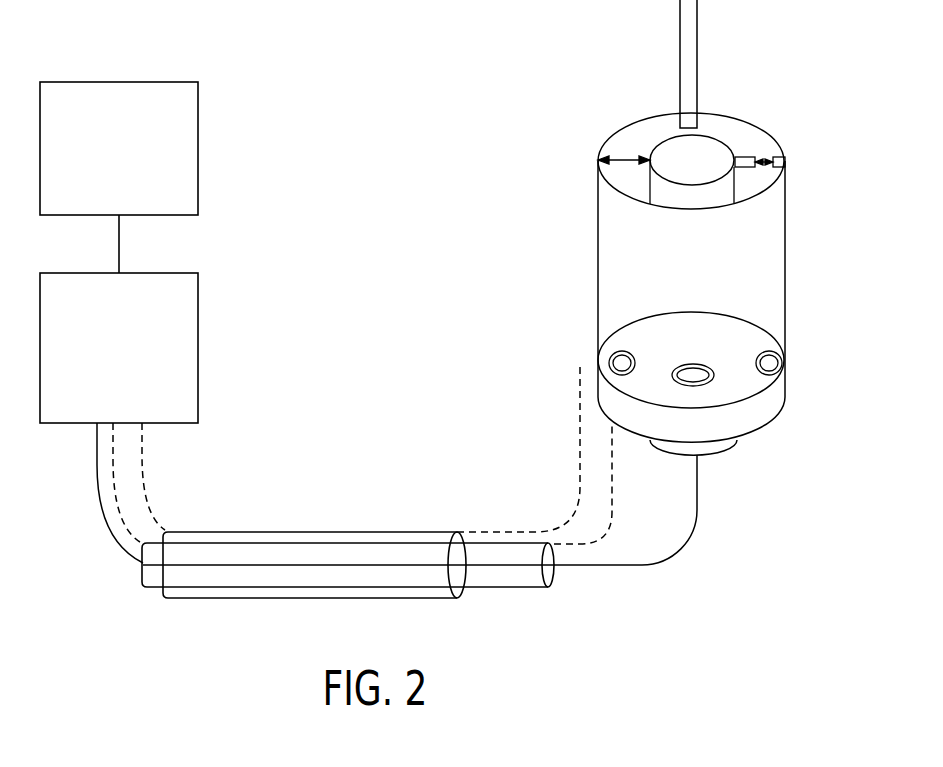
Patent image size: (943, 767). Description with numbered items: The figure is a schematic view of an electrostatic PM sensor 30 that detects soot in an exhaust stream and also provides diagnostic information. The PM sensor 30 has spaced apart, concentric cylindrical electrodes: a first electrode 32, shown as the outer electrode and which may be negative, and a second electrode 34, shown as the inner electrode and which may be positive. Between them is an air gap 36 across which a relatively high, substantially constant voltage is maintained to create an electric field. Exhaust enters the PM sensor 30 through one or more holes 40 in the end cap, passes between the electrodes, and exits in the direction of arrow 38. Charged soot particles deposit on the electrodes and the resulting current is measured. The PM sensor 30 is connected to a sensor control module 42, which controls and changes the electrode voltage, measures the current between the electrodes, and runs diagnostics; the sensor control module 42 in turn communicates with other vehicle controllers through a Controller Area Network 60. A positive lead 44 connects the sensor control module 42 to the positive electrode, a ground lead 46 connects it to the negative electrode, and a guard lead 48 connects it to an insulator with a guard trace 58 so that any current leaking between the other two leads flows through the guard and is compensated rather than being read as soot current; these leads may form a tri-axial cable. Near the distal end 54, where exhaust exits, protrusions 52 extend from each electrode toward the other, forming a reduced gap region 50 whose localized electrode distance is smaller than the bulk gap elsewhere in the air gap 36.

The PM sensor 30 is at (580, 104).
The first electrode 32 is at (750, 122).
The second electrode 34 is at (705, 137).
The air gap 36 is at (622, 157).
The arrow 38 is at (697, 15).
The holes 40 is at (622, 365).
The sensor control module 42 is at (198, 332).
The positive lead 44 is at (690, 540).
The ground lead 46 is at (578, 438).
The guard lead 48 is at (615, 495).
The reduced gap region 50 is at (767, 148).
The protrusions 52 is at (785, 165).
The distal end 54 is at (588, 181).
The guard trace 58 is at (780, 400).
The Controller Area Network 60 is at (198, 133).